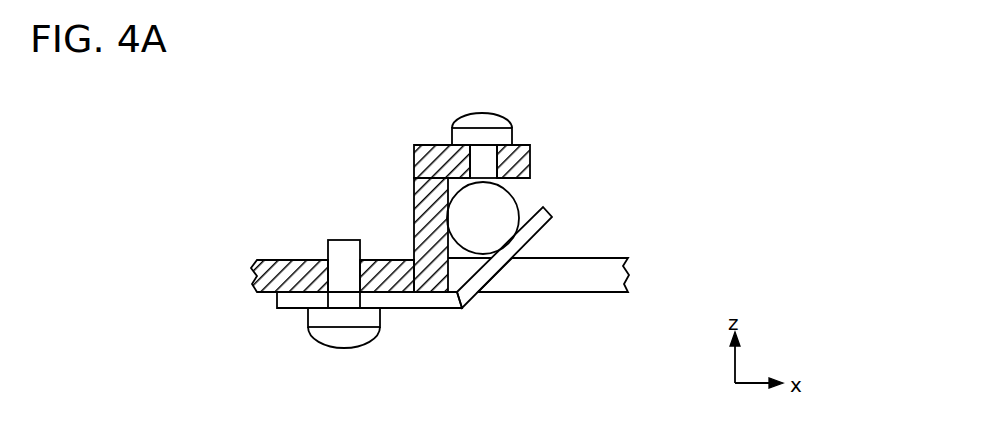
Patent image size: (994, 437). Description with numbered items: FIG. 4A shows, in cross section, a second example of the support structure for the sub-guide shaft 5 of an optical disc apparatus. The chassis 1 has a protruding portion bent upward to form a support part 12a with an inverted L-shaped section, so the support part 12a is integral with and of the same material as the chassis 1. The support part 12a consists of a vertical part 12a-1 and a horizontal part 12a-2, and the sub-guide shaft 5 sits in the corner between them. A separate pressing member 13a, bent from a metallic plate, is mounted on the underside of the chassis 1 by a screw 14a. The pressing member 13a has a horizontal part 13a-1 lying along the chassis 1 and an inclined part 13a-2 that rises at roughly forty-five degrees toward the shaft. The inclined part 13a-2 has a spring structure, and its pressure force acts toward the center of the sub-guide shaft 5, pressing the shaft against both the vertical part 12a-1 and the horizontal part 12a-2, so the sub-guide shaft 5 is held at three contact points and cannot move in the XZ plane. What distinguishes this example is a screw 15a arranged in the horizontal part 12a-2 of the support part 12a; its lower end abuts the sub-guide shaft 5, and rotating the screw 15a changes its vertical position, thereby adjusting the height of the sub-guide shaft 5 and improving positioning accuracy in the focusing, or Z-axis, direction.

The chassis 1 is at (283, 272).
The support part 12a is at (316, 72).
The vertical part 12a-1 is at (423, 217).
The horizontal part 12a-2 is at (445, 145).
The screw 15a is at (482, 138).
The sub-guide shaft 5 is at (483, 215).
The pressing member 13a is at (576, 333).
The horizontal part 13a-1 is at (428, 302).
The inclined part 13a-2 is at (470, 288).
The screw 14a is at (348, 320).